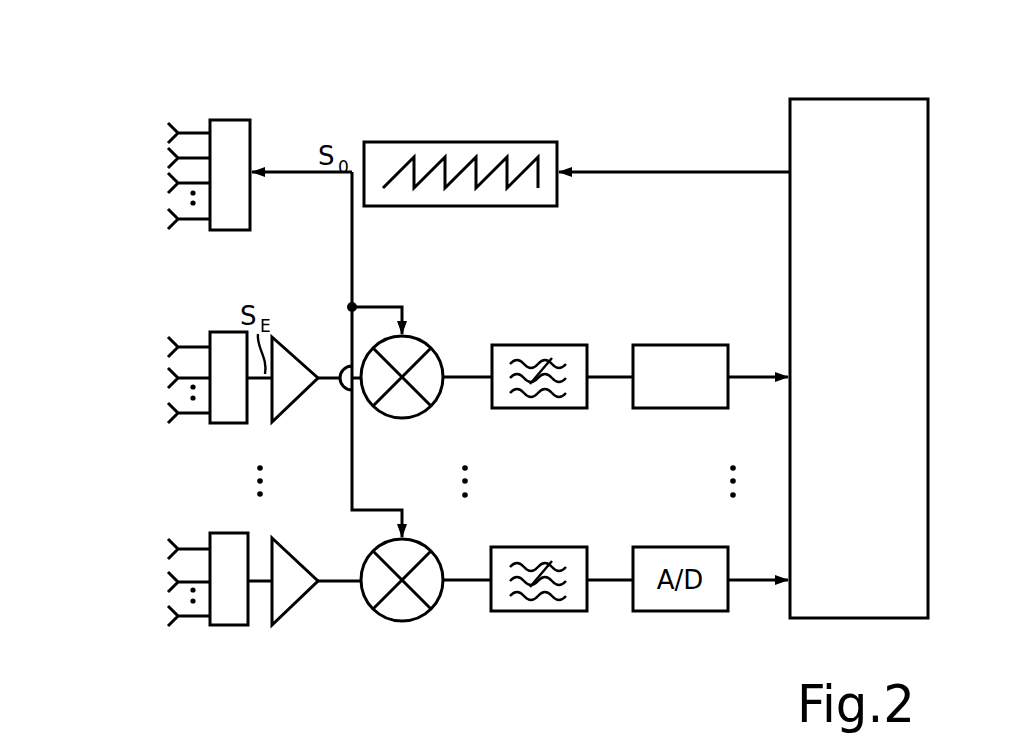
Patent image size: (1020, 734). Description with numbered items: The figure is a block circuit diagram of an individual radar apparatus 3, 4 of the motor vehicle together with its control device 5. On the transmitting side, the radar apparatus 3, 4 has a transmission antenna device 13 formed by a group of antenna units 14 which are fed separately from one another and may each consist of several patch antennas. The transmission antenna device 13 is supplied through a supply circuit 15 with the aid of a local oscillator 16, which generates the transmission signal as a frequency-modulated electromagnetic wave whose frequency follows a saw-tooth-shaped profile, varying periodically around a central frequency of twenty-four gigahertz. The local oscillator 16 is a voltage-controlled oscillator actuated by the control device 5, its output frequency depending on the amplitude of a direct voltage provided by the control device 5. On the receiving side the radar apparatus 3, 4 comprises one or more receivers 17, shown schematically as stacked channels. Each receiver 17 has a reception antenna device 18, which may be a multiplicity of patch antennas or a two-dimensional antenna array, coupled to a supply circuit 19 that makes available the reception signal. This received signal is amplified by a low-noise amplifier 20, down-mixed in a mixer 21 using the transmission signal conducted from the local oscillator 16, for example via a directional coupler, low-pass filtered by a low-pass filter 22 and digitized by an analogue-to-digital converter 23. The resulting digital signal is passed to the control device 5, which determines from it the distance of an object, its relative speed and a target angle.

The radar apparatus 3 is at (644, 115).
The radar apparatus 4 is at (665, 70).
The control device 5 is at (820, 110).
The transmission antenna device 13 is at (197, 118).
The antenna units 14 is at (168, 131).
The supply circuit 15 is at (228, 120).
The local oscillator 16 is at (400, 142).
The receivers 17 is at (215, 470).
The reception antenna device 18 is at (193, 338).
The supply circuit 19 is at (226, 345).
The low-noise amplifier 20 is at (283, 393).
The mixer 21 is at (402, 418).
The low-pass filter 22 is at (538, 410).
The analogue-to-digital converter 23 is at (677, 410).